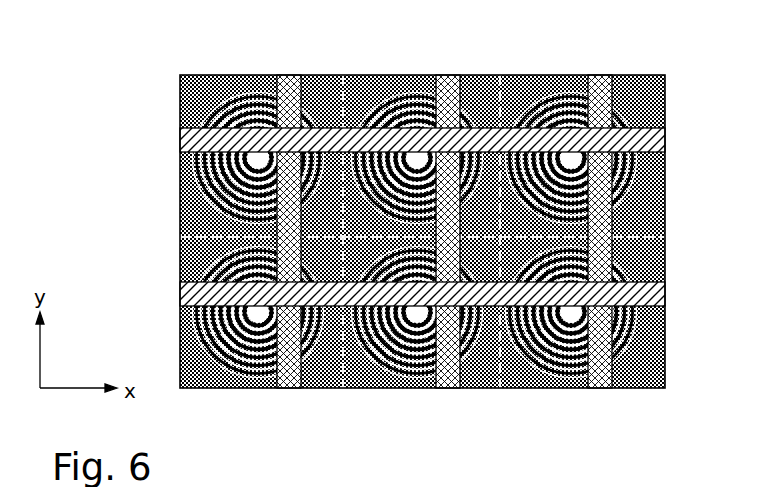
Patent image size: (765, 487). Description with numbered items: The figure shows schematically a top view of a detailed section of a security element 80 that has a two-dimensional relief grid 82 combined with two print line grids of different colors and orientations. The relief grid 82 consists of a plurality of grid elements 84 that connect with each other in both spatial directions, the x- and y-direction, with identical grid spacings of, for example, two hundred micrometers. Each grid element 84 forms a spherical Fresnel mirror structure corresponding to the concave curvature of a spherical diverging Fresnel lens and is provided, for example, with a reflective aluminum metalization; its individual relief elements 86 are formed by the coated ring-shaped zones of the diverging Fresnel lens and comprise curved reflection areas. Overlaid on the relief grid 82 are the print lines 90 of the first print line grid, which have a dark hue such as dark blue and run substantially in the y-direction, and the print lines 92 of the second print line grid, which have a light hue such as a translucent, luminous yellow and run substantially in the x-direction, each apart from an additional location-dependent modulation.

The security element 80 is at (373, 235).
The two-dimensional relief grid 82 is at (451, 235).
The grid element 84 is at (370, 77).
The relief element 86 is at (229, 77).
The print line of the first print line grid 90 is at (598, 390).
The print line of the second print line grid 92 is at (655, 294).